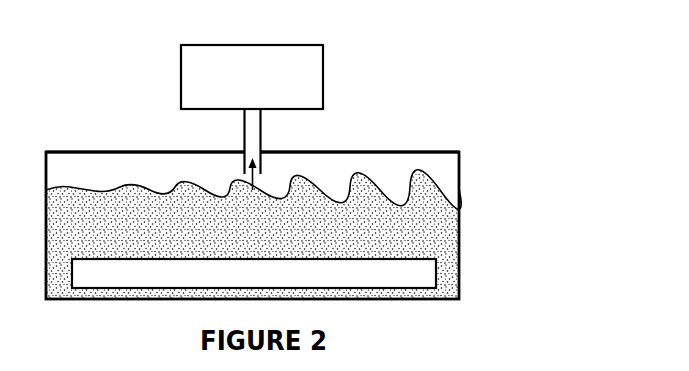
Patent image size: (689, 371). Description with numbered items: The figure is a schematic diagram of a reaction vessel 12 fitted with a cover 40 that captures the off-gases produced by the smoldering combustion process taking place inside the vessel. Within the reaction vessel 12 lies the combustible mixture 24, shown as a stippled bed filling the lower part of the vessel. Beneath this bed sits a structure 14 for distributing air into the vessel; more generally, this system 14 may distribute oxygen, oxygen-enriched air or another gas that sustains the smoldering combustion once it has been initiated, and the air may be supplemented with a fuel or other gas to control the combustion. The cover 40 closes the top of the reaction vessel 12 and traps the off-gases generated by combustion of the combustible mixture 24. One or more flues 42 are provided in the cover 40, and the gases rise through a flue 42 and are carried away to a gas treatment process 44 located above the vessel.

The reaction vessel 12 is at (459, 178).
The air distribution structure 14 is at (103, 281).
The combustible mixture 24 is at (195, 234).
The cover 40 is at (427, 152).
The flue 42 is at (261, 140).
The gas treatment process 44 is at (323, 68).